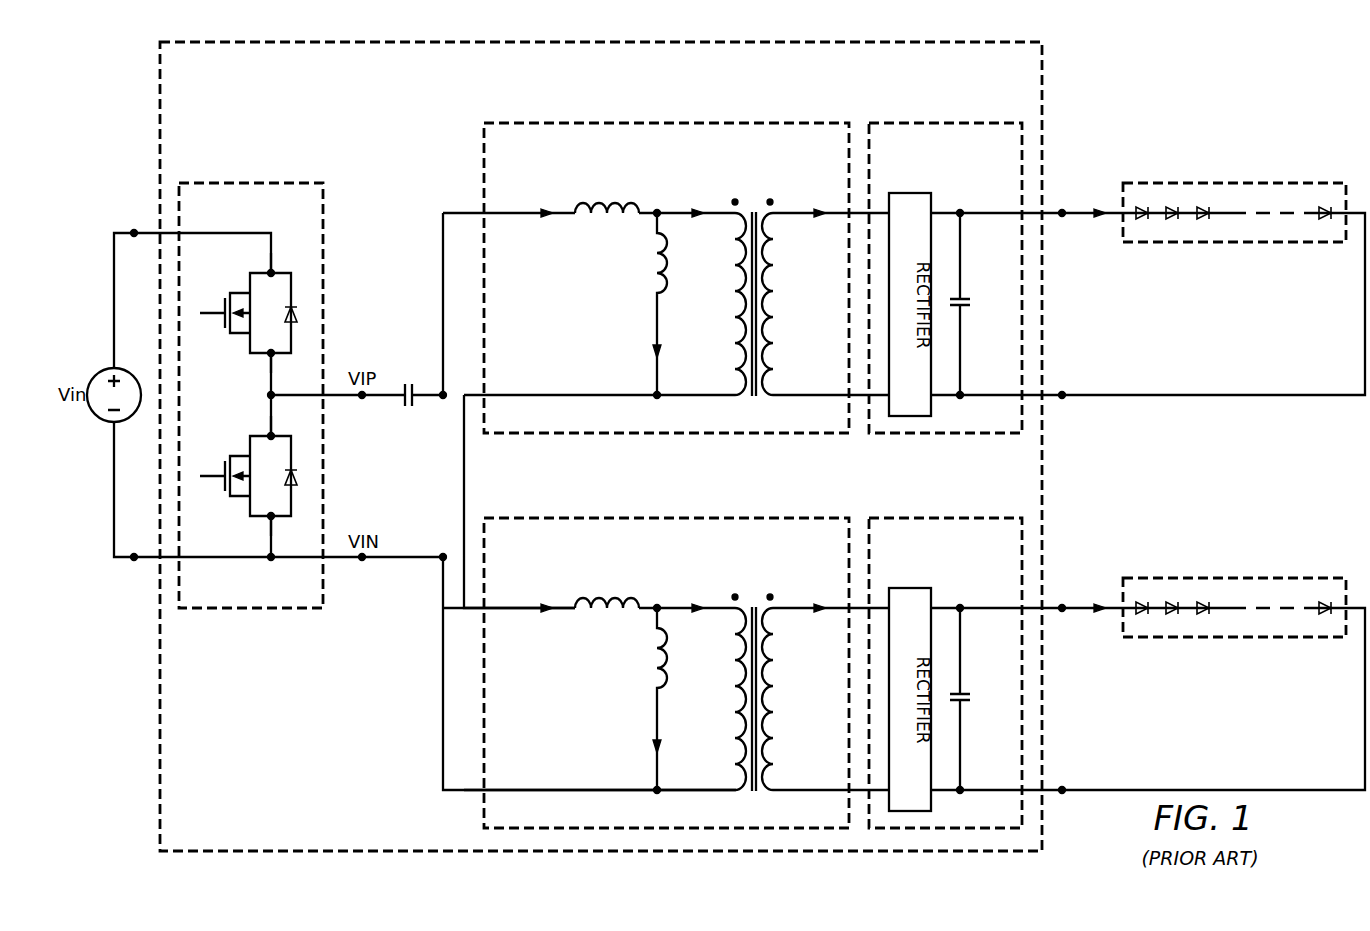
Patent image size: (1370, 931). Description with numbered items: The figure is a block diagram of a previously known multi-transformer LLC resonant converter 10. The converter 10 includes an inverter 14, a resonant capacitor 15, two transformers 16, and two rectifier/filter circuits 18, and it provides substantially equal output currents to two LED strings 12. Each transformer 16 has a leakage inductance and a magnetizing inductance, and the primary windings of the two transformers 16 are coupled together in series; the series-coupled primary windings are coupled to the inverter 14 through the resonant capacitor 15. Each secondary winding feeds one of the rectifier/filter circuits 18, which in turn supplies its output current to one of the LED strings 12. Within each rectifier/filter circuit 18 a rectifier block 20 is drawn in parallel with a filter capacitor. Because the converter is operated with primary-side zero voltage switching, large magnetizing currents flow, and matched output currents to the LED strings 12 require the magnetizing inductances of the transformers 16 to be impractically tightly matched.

The multi-transformer LLC resonant converter 10 is at (1043, 84).
The LED string 12 is at (1243, 578).
The inverter 14 is at (241, 184).
The resonant capacitor 15 is at (405, 412).
The transformer 16 is at (656, 518).
The rectifier/filter circuit 18 is at (940, 123).
The rectifier 20 is at (910, 587).